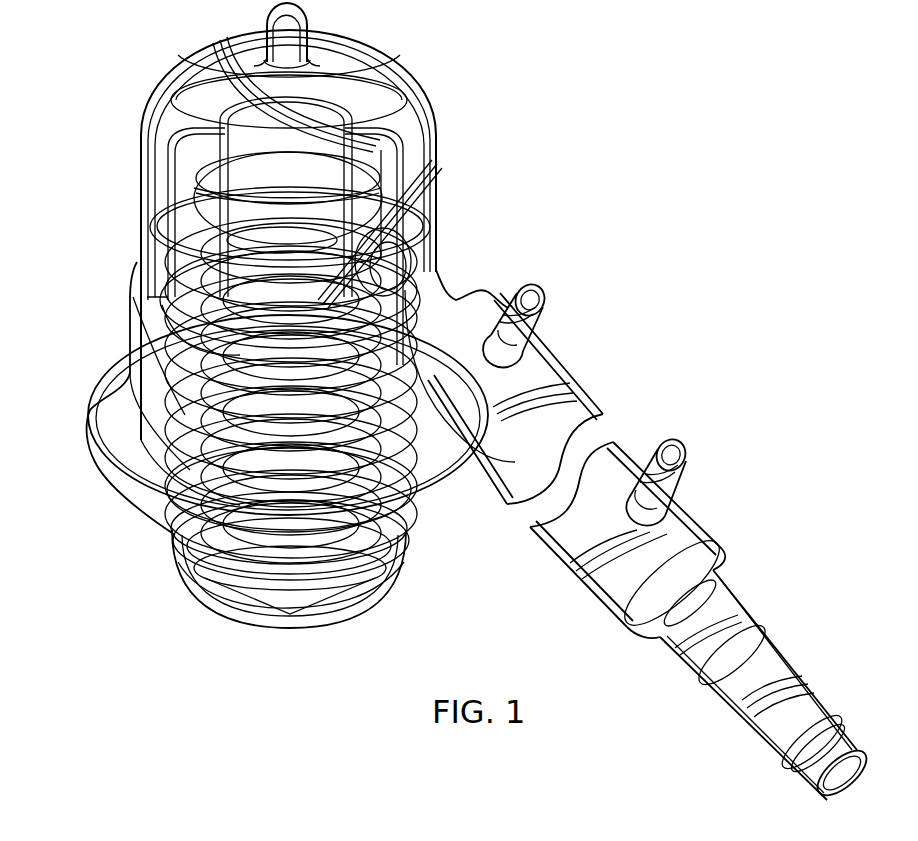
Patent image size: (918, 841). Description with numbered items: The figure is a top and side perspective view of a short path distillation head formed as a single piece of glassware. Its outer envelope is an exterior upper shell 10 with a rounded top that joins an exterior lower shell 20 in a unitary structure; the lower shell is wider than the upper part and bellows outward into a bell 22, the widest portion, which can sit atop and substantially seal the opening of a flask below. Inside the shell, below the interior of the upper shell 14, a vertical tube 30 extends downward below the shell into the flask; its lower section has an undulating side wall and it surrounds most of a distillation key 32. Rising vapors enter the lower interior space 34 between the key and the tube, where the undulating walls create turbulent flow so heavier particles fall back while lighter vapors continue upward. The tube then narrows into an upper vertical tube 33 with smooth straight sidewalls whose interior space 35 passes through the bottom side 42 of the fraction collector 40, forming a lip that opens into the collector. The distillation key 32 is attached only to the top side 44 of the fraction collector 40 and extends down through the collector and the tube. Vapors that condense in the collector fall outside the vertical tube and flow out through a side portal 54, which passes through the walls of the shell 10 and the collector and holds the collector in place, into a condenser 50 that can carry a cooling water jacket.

The exterior upper shell 10 is at (178, 75).
The interior of upper 14 is at (158, 162).
The exterior of lower shell 20 is at (128, 350).
The bell of lower shell 22 is at (102, 387).
The vertical tube 30 is at (165, 490).
The key 32 is at (250, 578).
The upper vertical tube 33 is at (240, 185).
The interior of lower 34 is at (200, 530).
The interior of upper 35 is at (195, 300).
The fraction collector 40 is at (375, 130).
The bottom of fraction collector 42 is at (315, 305).
The top of fraction collector 44 is at (245, 150).
The condenser 50 is at (490, 303).
The side portal 54 is at (393, 268).